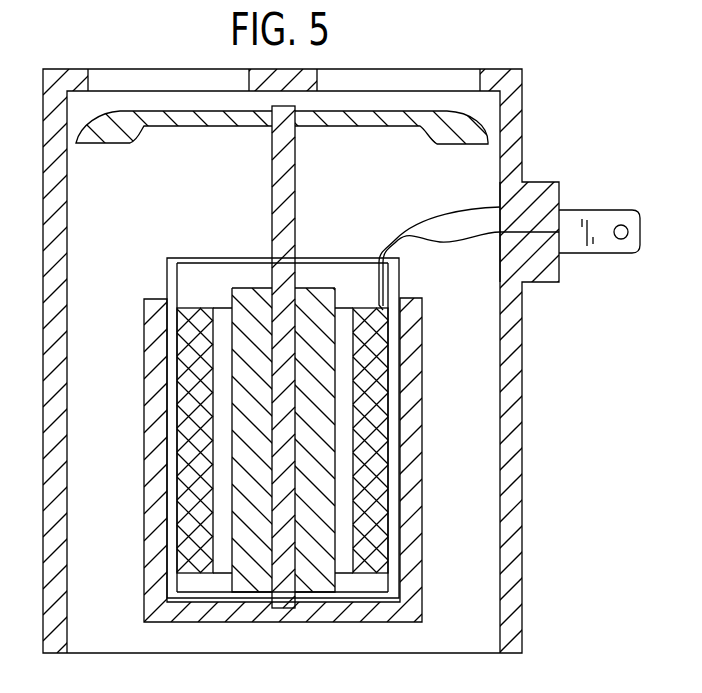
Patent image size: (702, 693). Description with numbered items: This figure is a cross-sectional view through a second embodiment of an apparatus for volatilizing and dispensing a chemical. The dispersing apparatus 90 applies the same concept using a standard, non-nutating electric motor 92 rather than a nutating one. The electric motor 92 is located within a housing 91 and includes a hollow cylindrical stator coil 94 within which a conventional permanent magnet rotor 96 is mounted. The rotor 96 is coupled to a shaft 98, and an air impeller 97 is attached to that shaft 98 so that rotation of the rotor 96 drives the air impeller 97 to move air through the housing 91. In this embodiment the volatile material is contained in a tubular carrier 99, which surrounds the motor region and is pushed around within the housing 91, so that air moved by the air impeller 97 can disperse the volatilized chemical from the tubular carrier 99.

The dispersing apparatus 90 is at (523, 350).
The housing 91 is at (508, 138).
The electric motor 92 is at (403, 277).
The stator coil 94 is at (368, 552).
The permanent magnet rotor 96 is at (313, 452).
The air impeller 97 is at (135, 127).
The shaft 98 is at (283, 193).
The tubular carrier 99 is at (157, 298).